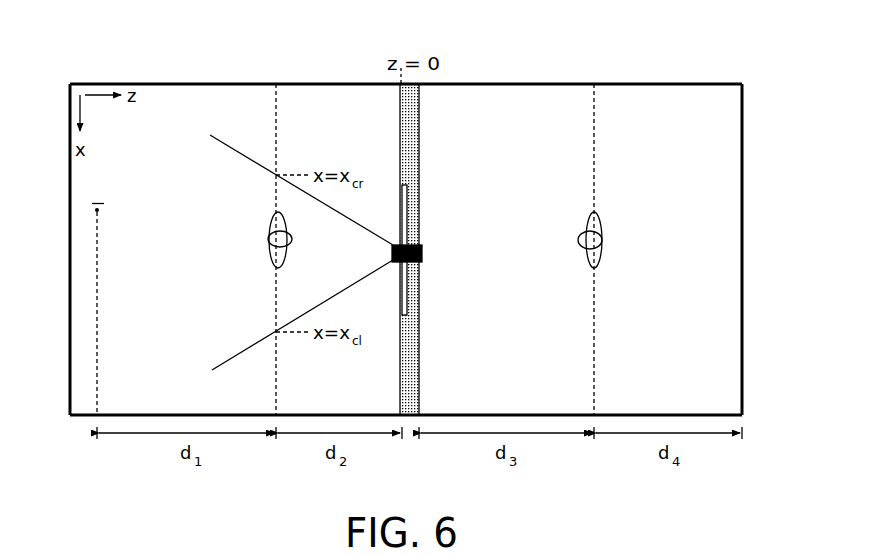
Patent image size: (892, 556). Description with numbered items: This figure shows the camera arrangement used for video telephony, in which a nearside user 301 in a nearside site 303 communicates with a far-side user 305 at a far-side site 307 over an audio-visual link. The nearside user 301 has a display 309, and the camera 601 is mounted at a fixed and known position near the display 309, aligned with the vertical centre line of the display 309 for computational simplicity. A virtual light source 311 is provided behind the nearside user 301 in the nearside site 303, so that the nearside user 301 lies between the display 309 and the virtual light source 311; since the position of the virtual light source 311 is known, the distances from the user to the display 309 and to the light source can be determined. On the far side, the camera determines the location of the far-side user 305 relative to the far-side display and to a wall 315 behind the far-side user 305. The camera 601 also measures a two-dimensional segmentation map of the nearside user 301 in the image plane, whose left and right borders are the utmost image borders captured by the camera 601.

The nearside user 301 is at (268, 238).
The nearside site 303 is at (203, 84).
The far-side user 305 is at (600, 240).
The far-side site 307 is at (676, 84).
The display 309 is at (408, 302).
The virtual light source 311 is at (97, 210).
The wall 315 is at (742, 163).
The camera 601 is at (422, 252).